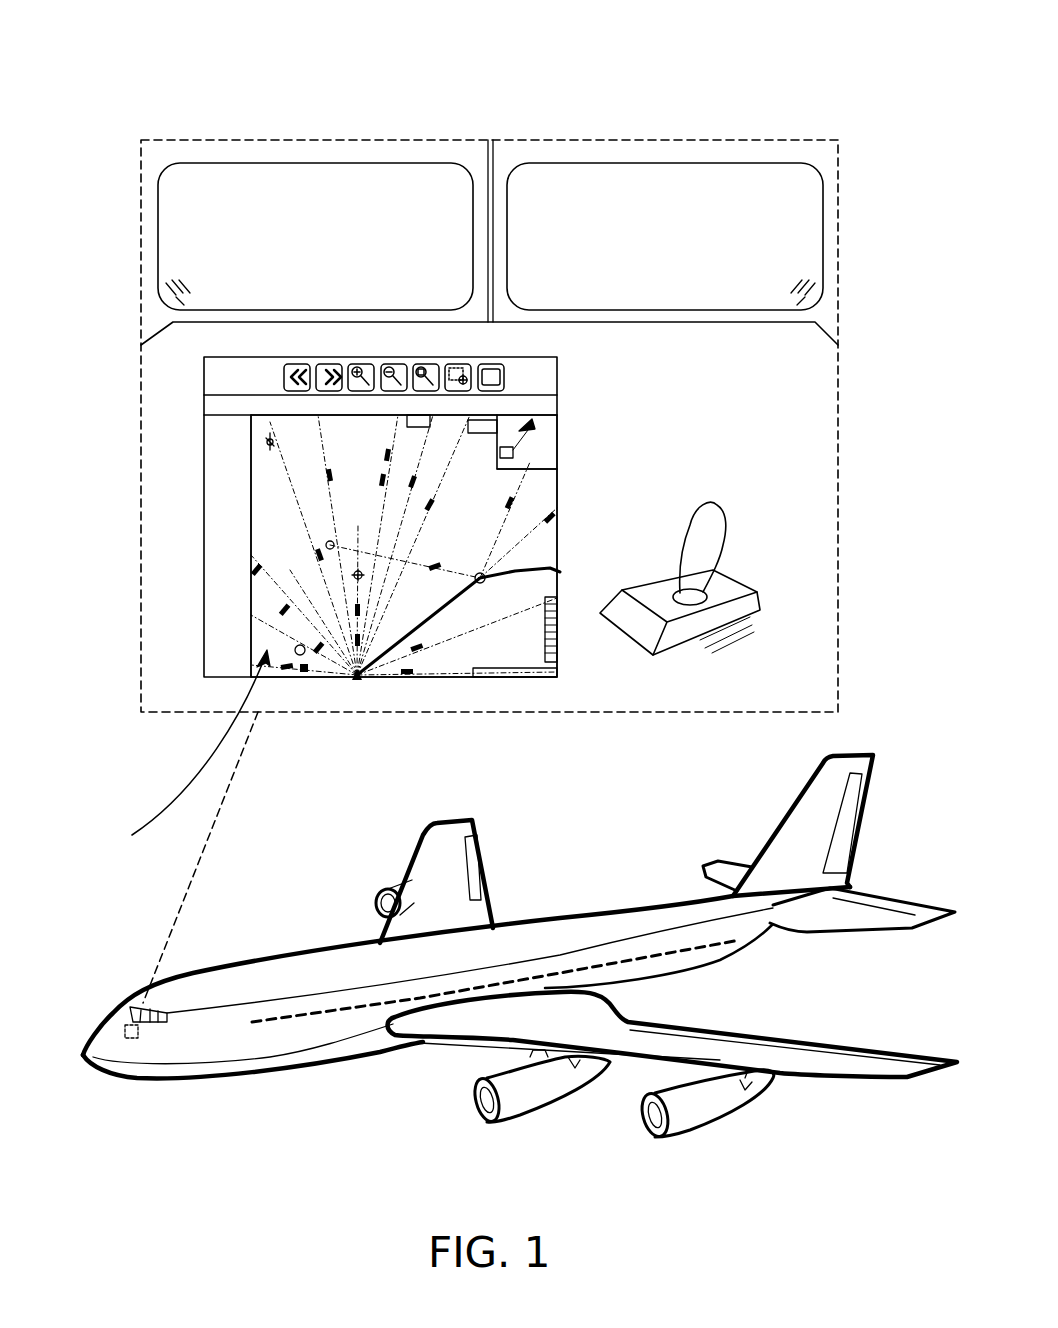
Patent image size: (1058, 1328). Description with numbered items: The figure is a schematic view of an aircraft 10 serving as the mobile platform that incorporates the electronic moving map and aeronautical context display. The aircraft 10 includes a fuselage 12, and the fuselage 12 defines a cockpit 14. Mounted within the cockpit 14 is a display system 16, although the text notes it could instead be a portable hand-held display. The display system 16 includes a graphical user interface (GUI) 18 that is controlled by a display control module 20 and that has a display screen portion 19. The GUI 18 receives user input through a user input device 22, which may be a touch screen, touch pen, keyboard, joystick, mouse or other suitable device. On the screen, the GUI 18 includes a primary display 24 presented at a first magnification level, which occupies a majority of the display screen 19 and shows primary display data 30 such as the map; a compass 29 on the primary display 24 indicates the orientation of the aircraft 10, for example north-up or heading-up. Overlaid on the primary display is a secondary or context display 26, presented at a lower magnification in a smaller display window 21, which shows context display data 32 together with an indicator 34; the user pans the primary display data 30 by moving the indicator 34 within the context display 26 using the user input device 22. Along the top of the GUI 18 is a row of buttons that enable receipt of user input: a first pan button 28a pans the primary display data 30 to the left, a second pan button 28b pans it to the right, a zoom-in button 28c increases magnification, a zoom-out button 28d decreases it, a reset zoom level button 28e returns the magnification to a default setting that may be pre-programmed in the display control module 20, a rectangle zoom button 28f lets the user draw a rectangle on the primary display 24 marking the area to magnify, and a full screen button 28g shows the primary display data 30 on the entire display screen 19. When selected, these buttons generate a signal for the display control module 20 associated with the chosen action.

The aircraft 10 is at (197, 946).
The fuselage 12 is at (187, 1068).
The cockpit 14 is at (153, 1022).
The display system 16 is at (605, 716).
The graphical user interface (GUI) 18 is at (204, 545).
The display screen portion 19 is at (253, 620).
The display control module 20 is at (110, 1022).
The display window 21 is at (520, 470).
The user input device 22 is at (703, 558).
The primary display 24 is at (181, 826).
The context display 26 is at (530, 425).
The first pan button 28a is at (288, 364).
The second pan button 28b is at (332, 364).
The zoom-in button 28c is at (365, 364).
The zoom-out button 28d is at (397, 364).
The reset zoom level button 28e is at (433, 364).
The rectangle zoom button 28f is at (458, 364).
The full screen button 28g is at (491, 364).
The compass 29 is at (270, 446).
The primary display data 30 is at (303, 668).
The context display data 32 is at (532, 460).
The indicator 34 is at (513, 452).